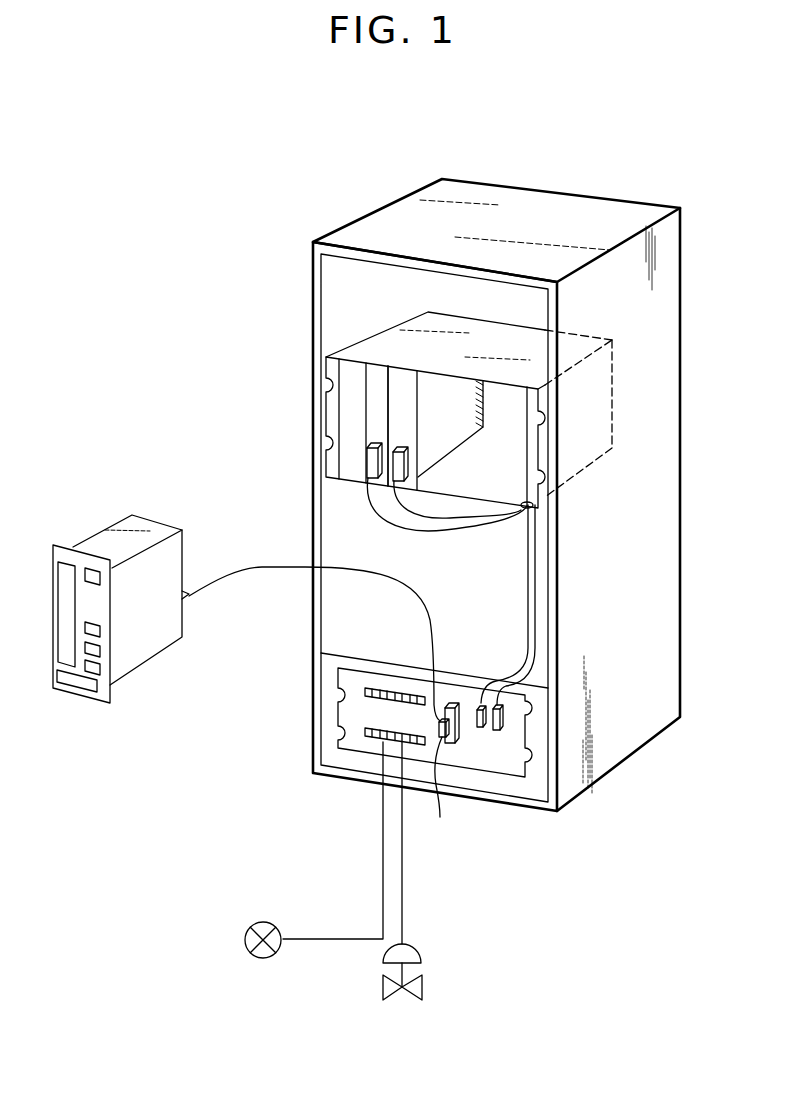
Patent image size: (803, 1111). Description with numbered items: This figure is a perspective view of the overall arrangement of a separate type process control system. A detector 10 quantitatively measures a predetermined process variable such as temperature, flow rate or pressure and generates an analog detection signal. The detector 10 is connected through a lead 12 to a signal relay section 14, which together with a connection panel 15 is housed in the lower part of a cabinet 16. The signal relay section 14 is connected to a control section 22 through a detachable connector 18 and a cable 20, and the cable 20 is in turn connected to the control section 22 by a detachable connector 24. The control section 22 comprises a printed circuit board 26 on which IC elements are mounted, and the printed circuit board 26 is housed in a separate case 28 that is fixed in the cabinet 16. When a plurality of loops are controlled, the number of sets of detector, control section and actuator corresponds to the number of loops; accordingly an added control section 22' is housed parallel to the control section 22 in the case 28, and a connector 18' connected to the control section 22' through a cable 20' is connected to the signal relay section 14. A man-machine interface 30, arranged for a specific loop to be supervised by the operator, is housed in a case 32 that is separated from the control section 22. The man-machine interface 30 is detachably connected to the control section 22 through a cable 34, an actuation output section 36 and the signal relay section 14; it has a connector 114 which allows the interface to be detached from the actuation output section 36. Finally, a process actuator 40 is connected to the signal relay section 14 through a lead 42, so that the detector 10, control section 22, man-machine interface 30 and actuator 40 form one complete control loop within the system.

The detector 10 is at (263, 921).
The lead 12 is at (383, 887).
The signal relay section 14 is at (333, 731).
The connection panel 15 is at (357, 678).
The cabinet 16 is at (655, 728).
The detachable connector 18 is at (539, 720).
The connector 18' is at (485, 737).
The cable 20 is at (492, 593).
The cable 20' is at (450, 590).
The control section 22 is at (399, 393).
The control section 22' is at (362, 391).
The detachable connector 24 is at (410, 468).
The printed circuit board 26 is at (466, 440).
The case 28 is at (470, 335).
The man-machine interface 30 is at (112, 517).
The case 32 is at (122, 670).
The cable 34 is at (261, 568).
The actuation output section 36 is at (450, 703).
The process actuator 40 is at (417, 945).
The lead 42 is at (405, 885).
The connector 114 is at (451, 789).